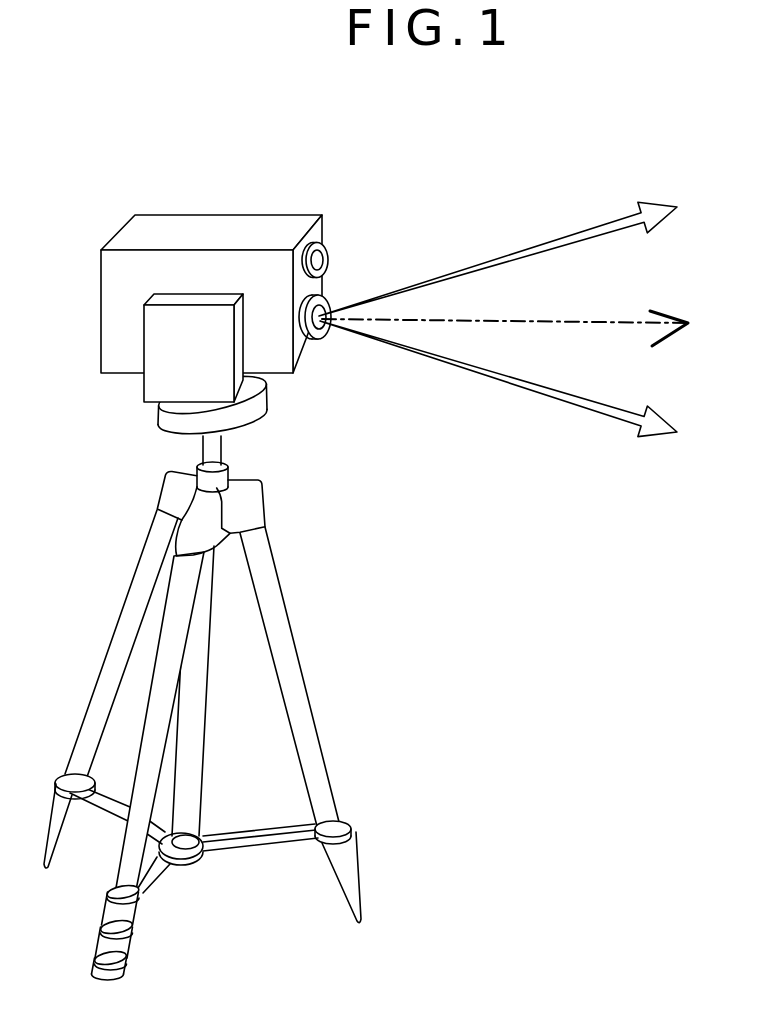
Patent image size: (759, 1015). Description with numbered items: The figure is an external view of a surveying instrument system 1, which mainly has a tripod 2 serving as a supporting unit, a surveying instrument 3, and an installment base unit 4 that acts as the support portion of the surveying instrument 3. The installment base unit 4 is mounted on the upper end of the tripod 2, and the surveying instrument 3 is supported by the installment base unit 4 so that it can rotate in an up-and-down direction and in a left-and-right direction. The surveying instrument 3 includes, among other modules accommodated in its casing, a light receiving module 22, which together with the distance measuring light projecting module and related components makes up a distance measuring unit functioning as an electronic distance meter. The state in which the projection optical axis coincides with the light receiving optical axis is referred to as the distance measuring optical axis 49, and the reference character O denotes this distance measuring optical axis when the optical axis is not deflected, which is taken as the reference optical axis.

The surveying instrument system 1 is at (208, 149).
The tripod 2 is at (117, 630).
The surveying instrument 3 is at (150, 215).
The installment base unit 4 is at (152, 422).
The light receiving module 22 is at (327, 258).
The distance measuring optical axis 49 is at (530, 248).
The distance measuring optical axis O is at (482, 318).